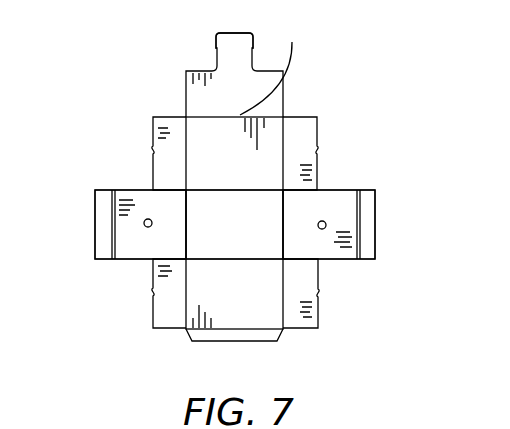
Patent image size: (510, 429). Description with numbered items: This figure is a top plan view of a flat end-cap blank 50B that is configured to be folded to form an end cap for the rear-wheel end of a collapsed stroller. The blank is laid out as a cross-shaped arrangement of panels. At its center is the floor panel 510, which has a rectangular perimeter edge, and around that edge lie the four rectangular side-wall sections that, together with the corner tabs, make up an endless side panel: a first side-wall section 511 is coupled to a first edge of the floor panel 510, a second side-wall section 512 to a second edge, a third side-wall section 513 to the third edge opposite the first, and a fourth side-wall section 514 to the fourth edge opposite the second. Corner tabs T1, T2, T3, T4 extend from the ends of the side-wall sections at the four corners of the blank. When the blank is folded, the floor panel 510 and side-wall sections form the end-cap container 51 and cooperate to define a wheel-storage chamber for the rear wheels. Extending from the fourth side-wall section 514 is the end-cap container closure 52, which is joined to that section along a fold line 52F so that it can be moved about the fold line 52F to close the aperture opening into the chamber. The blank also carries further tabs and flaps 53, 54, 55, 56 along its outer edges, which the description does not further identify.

The end-cap blank 50B is at (238, 196).
The end-cap container 51 is at (230, 249).
The end-cap container closure 52 is at (178, 94).
The fold line 52F is at (273, 68).
The locking tab 53 is at (215, 41).
The bottom flap 54 is at (240, 337).
The right side flap 55 is at (369, 225).
The left side flap 56 is at (99, 233).
The floor panel 510 is at (255, 235).
The first side-wall section 511 is at (260, 173).
The second side-wall section 512 is at (332, 253).
The third side-wall section 513 is at (255, 295).
The fourth side-wall section 514 is at (177, 253).
The corner tab T1 is at (302, 285).
The corner tab T2 is at (302, 134).
The corner tab T3 is at (164, 171).
The corner tab T4 is at (167, 322).